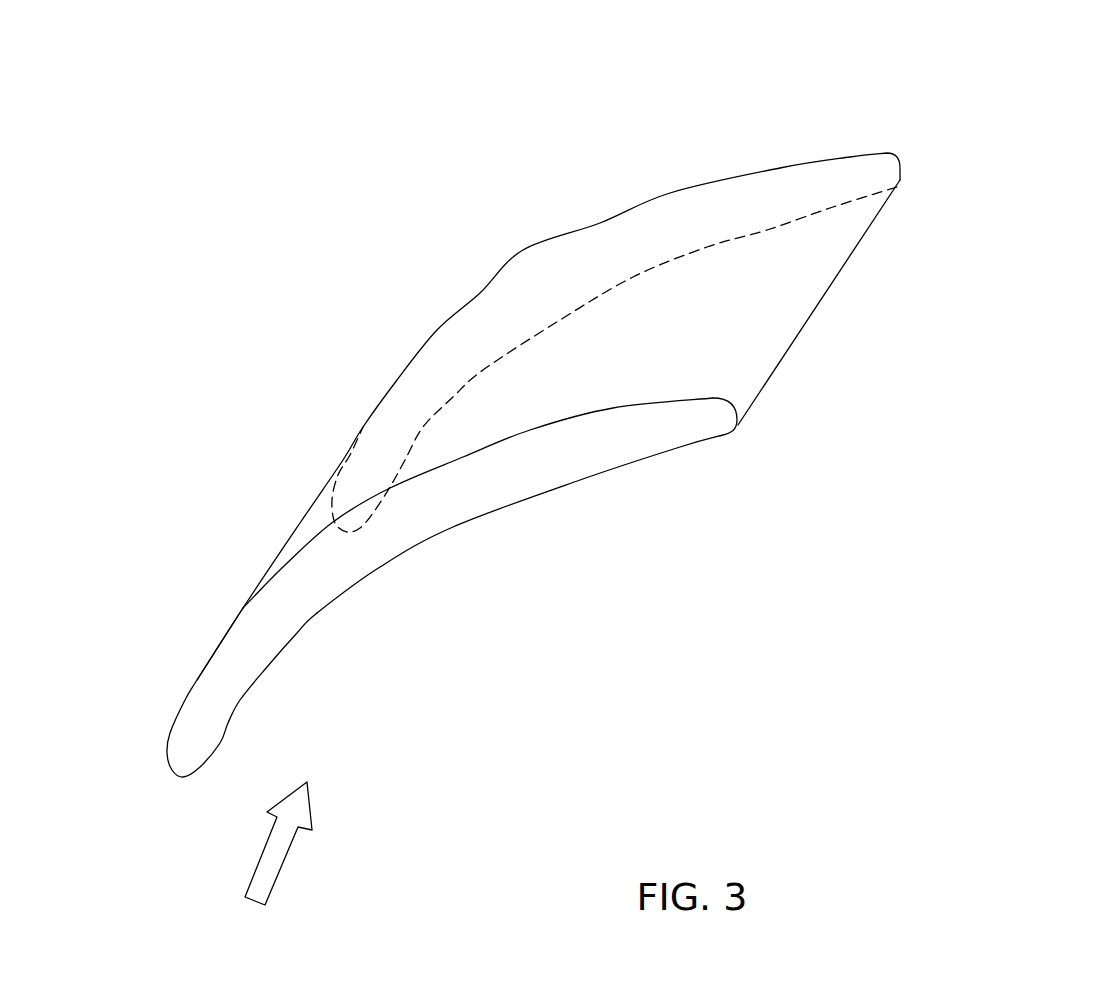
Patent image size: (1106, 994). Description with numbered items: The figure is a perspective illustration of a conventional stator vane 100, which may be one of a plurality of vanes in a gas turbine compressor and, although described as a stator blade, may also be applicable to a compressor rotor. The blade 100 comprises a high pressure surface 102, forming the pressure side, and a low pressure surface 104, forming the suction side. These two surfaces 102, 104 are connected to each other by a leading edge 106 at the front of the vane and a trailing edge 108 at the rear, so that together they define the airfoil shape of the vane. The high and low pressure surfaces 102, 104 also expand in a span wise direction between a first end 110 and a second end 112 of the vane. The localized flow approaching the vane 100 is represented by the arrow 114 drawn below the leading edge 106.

The stator vane 100 is at (1004, 90).
The high pressure surface 102 is at (317, 620).
The low pressure surface 104 is at (620, 348).
The leading edge 106 is at (165, 768).
The trailing edge 108 is at (820, 303).
The first end 110 is at (637, 245).
The second end 112 is at (493, 473).
The arrow 114 is at (290, 853).